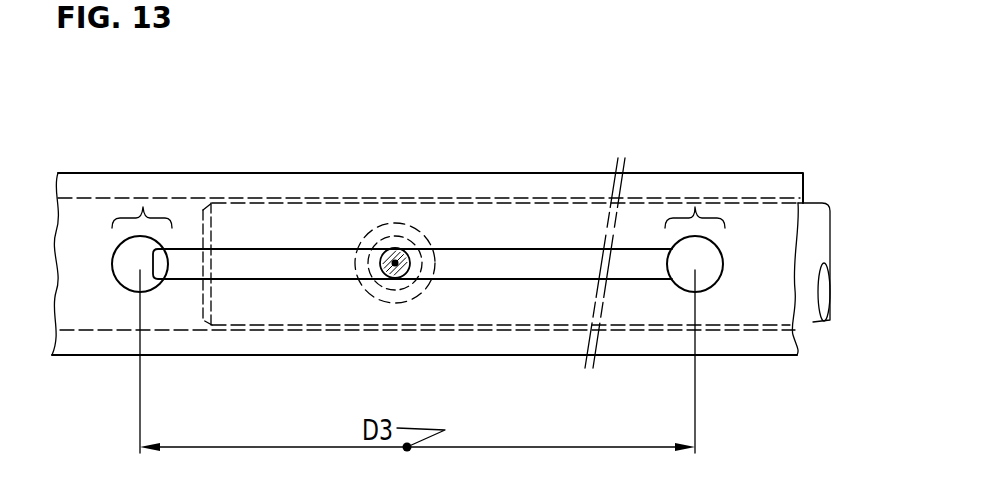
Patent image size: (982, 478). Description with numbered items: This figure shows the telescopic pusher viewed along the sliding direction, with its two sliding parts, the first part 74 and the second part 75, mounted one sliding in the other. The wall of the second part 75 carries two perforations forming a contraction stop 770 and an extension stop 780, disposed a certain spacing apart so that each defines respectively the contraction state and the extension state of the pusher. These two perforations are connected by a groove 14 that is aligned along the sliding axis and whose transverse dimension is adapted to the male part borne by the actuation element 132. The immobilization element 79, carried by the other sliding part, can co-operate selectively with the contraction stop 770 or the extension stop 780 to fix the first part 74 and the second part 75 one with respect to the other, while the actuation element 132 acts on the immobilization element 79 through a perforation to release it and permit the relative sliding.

The groove 14 is at (140, 266).
The first part 74 is at (812, 225).
The second part 75 is at (756, 184).
The immobilization element 79 is at (462, 263).
The actuation element 132 is at (396, 260).
The contraction stop 770 is at (143, 210).
The extension stop 780 is at (695, 210).